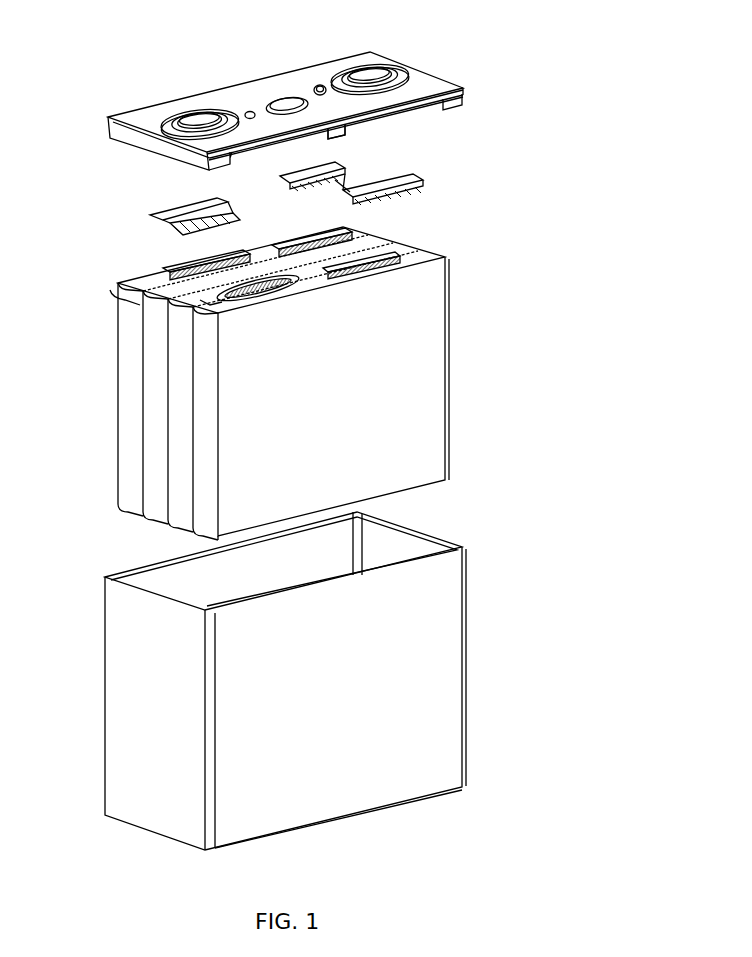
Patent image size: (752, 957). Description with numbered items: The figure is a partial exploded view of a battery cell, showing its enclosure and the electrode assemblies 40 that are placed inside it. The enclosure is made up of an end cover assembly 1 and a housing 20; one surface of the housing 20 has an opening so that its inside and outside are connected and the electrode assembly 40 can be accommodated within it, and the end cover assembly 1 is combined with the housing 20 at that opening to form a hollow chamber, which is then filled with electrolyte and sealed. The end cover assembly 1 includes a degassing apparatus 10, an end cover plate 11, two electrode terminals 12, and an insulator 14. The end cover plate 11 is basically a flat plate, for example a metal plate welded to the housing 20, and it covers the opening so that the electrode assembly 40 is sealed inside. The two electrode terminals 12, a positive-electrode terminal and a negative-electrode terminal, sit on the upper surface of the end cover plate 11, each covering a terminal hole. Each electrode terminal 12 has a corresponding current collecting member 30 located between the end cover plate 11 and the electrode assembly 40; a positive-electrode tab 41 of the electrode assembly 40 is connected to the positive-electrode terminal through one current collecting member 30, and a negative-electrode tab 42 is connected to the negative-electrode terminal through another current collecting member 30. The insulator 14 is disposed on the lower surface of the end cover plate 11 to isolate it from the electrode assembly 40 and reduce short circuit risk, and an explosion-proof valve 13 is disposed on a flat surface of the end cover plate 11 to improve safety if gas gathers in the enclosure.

The end cover assembly 1 is at (309, 85).
The degassing apparatus 10 is at (320, 86).
The end cover plate 11 is at (425, 88).
The electrode terminal 12 is at (203, 118).
The explosion-proof valve 13 is at (291, 97).
The insulator 14 is at (343, 130).
The housing 20 is at (418, 657).
The current collecting member 30 is at (150, 217).
The electrode assembly 40 is at (286, 383).
The positive-electrode tab 41 is at (197, 300).
The negative-electrode tab 42 is at (417, 250).